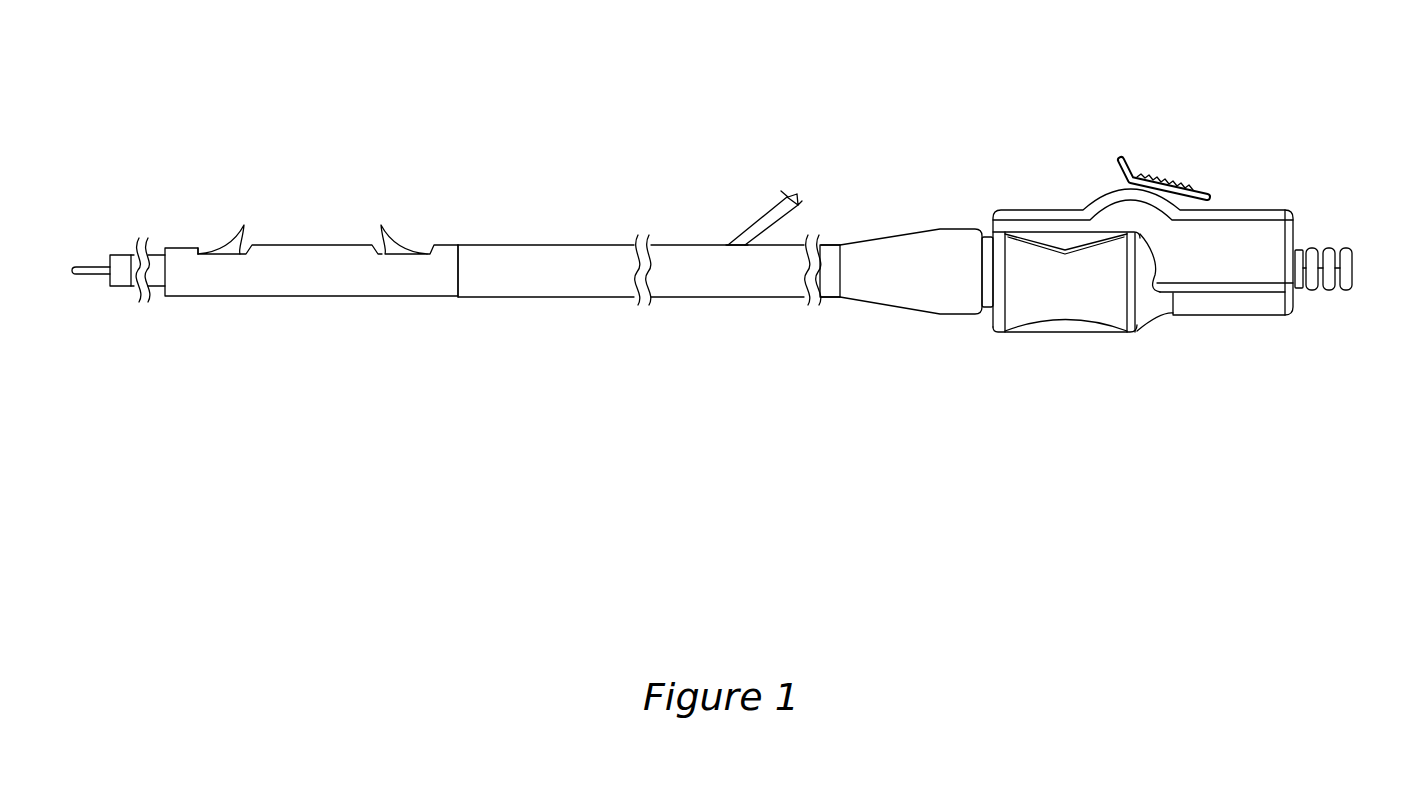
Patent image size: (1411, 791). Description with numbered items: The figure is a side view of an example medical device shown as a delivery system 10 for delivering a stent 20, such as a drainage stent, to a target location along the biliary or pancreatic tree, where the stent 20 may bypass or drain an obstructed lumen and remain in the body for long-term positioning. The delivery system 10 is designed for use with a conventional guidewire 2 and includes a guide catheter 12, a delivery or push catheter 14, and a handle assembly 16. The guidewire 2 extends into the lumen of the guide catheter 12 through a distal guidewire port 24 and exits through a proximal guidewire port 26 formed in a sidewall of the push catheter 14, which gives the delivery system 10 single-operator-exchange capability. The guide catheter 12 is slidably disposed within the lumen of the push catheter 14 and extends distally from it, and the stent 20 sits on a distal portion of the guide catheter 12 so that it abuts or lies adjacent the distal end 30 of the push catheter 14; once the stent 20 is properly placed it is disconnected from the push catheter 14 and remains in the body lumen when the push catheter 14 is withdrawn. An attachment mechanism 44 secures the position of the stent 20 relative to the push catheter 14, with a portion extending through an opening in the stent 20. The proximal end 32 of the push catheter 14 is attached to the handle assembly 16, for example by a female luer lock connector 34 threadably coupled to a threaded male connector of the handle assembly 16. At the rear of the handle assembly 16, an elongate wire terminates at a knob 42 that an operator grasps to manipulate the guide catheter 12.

The delivery system 10 is at (582, 122).
The guidewire 2 is at (93, 267).
The guide catheter 12 is at (124, 256).
The distal guidewire port 24 is at (110, 285).
The stent 20 is at (305, 290).
The attachment mechanism 44 is at (437, 243).
The distal end 30 is at (457, 298).
The push catheter 14 is at (608, 245).
The proximal guidewire port 26 is at (725, 243).
The proximal end 32 is at (843, 332).
The female luer lock connector 34 is at (950, 235).
The handle assembly 16 is at (1105, 369).
The knob 42 is at (1332, 254).